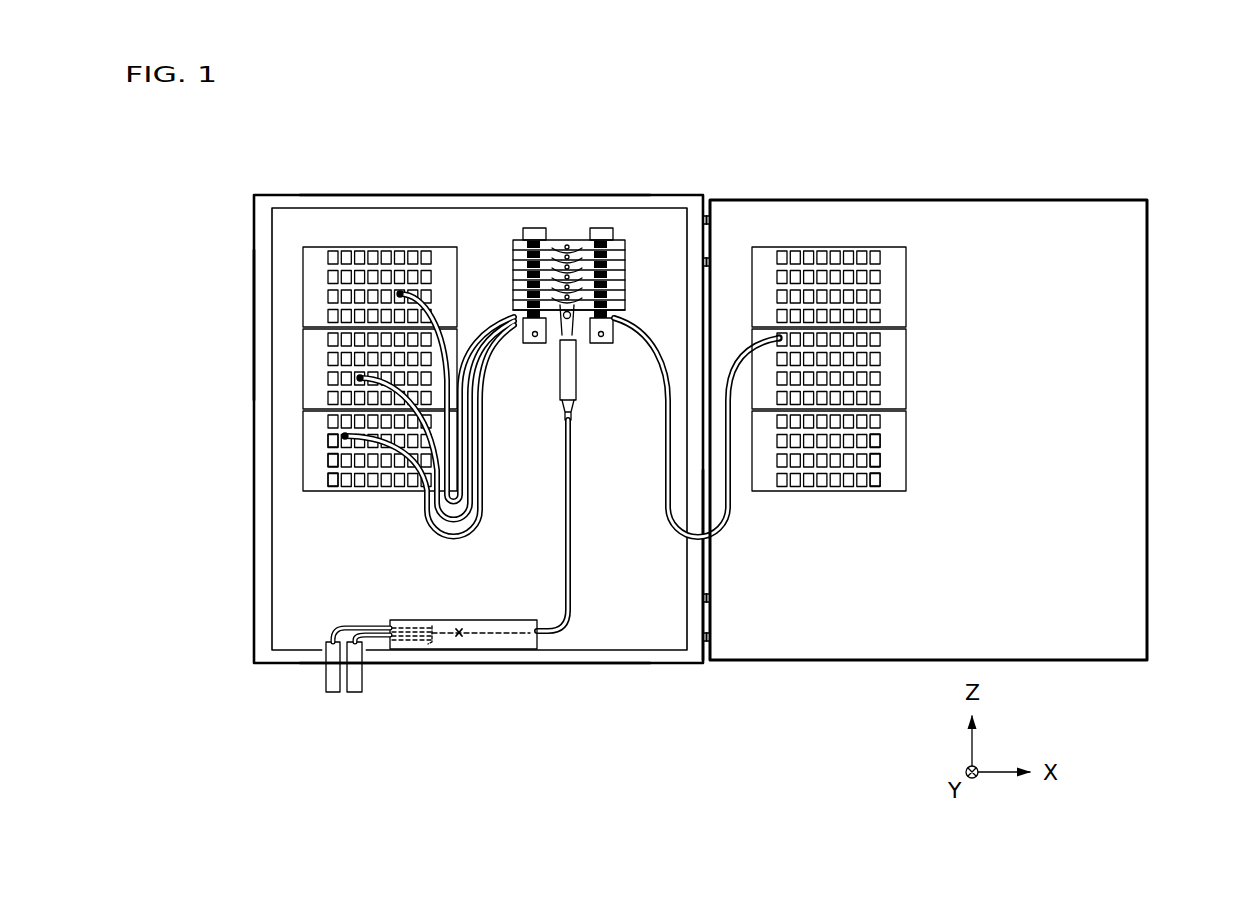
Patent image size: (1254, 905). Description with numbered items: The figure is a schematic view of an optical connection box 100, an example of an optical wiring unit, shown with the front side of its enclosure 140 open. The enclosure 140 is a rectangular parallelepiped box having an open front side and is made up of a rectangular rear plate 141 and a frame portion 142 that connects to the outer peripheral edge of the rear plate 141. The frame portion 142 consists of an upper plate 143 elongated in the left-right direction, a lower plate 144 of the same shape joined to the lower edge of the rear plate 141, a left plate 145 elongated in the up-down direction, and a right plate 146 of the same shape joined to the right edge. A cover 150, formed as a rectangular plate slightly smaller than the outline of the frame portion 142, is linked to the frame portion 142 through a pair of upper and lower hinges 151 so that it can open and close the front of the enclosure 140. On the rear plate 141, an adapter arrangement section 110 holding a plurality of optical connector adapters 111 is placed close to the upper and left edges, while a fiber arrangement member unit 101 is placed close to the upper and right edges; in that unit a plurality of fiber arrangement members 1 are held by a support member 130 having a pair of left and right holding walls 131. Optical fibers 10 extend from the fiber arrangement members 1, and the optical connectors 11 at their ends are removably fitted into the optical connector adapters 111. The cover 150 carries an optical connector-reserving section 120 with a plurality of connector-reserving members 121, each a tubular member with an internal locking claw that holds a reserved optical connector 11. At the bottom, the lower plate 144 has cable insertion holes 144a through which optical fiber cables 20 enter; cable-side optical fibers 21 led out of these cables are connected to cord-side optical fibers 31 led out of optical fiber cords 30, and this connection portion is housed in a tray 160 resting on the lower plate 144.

The optical connection box 100 is at (691, 412).
The fiber arrangement member 1 is at (502, 267).
The optical fiber 10 is at (425, 500).
The optical connector 11 is at (345, 436).
The optical fiber cable 20 is at (347, 683).
The cable-side optical fiber 21 is at (380, 625).
The optical fiber cord 30 is at (572, 548).
The cord-side optical fiber 31 is at (496, 634).
The fiber arrangement member unit 101 is at (640, 242).
The adapter arrangement section 110 is at (300, 424).
The optical connector adapter 111 is at (328, 441).
The optical connector-reserving section 120 is at (912, 426).
The connector-reserving member 121 is at (880, 477).
The support member 130 is at (535, 226).
The holding wall 131 is at (588, 232).
The enclosure 140 is at (250, 217).
The rear plate 141 is at (297, 537).
The frame portion 142 is at (364, 200).
The upper plate 143 is at (475, 157).
The lower plate 144 is at (527, 653).
The cable insertion hole 144a is at (333, 663).
The left plate 145 is at (262, 299).
The right plate 146 is at (690, 596).
The cover 150 is at (1148, 254).
The hinge 151 is at (712, 230).
The tray 160 is at (470, 650).